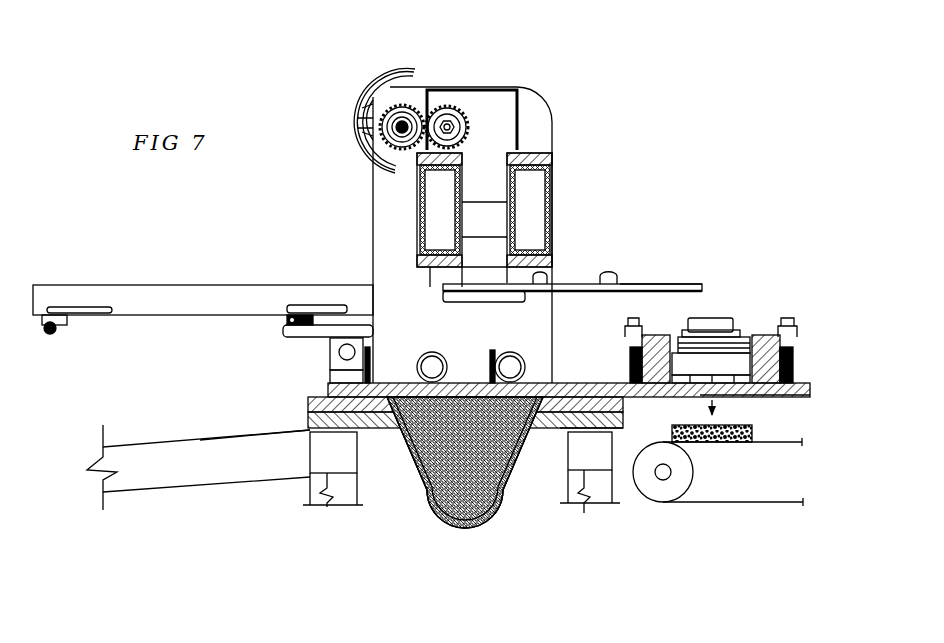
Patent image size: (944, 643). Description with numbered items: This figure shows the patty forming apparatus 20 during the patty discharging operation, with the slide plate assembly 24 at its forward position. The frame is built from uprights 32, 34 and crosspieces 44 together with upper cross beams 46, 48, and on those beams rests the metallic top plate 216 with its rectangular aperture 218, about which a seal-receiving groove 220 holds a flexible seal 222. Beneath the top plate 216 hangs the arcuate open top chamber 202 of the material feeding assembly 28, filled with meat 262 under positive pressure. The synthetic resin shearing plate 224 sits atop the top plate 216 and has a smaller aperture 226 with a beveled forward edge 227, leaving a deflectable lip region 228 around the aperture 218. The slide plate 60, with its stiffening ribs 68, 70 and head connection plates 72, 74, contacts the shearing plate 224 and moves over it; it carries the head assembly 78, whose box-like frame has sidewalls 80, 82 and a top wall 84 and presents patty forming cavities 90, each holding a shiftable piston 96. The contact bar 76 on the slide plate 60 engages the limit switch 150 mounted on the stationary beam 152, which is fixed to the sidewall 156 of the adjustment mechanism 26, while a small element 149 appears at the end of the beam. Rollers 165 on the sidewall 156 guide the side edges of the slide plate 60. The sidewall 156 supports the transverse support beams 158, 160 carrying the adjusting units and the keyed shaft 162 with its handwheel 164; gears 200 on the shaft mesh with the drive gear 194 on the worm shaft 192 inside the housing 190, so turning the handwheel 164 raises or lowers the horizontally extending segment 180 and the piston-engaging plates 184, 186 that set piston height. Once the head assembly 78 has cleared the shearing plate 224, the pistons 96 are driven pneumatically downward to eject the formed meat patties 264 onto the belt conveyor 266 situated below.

The patty forming apparatus 20 is at (267, 222).
The slide plate assembly 24 is at (800, 262).
The adjustment mechanism 26 is at (532, 135).
The material feeding assembly 28 is at (433, 553).
The uprights 32 is at (353, 517).
The uprights 34 is at (610, 487).
The crosspieces 44 is at (125, 485).
The upper cross beam 46 is at (570, 477).
The upper cross beam 48 is at (310, 503).
The slide plate 60 is at (330, 387).
The stiffening rib 68 is at (490, 353).
The stiffening rib 70 is at (377, 342).
The head connection plate 72 is at (612, 372).
The head connection plate 74 is at (795, 370).
The contact bar 76 is at (320, 332).
The head assembly 78 is at (765, 328).
The sidewall 80 is at (628, 365).
The sidewall 82 is at (793, 348).
The top wall 84 is at (740, 330).
The patty forming cavity 90 is at (747, 395).
The piston 96 is at (722, 300).
The stop 149 is at (45, 328).
The limit switch 150 is at (283, 318).
The stationary beam 152 is at (75, 295).
The sidewall 156 is at (537, 113).
The support beam 158 is at (420, 220).
The support beam 160 is at (553, 177).
The keyed shaft 162 is at (402, 122).
The handwheel 164 is at (367, 82).
The slide plate engaging roller 165 is at (432, 363).
The horizontally extending segment 180 is at (477, 302).
The plate 184 is at (567, 281).
The plate 186 is at (645, 295).
The housing 190 is at (518, 88).
The worm shaft 192 is at (456, 127).
The drive gear 194 is at (452, 125).
The gear 200 is at (372, 173).
The chamber 202 is at (473, 528).
The top plate 216 is at (373, 430).
The aperture 218 is at (435, 515).
The seal-receiving groove 220 is at (622, 415).
The flexible seal 222 is at (310, 433).
The shearing plate 224 is at (310, 400).
The aperture 226 is at (463, 527).
The beveled forward edge 227 is at (523, 490).
The lip region 228 is at (393, 382).
The meat 262 is at (497, 520).
The meat patties 264 is at (733, 442).
The belt conveyor 266 is at (717, 503).